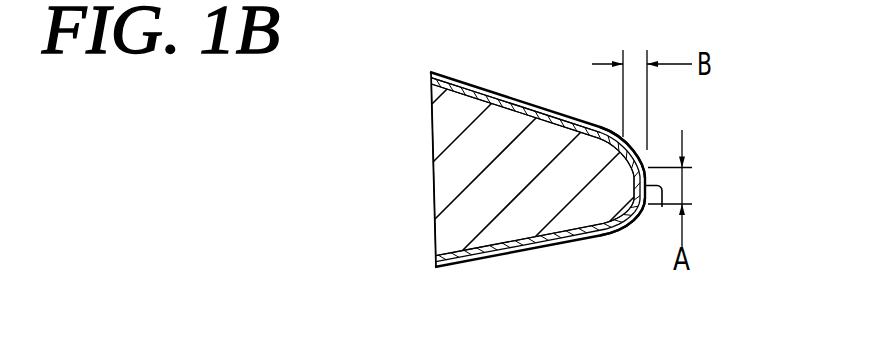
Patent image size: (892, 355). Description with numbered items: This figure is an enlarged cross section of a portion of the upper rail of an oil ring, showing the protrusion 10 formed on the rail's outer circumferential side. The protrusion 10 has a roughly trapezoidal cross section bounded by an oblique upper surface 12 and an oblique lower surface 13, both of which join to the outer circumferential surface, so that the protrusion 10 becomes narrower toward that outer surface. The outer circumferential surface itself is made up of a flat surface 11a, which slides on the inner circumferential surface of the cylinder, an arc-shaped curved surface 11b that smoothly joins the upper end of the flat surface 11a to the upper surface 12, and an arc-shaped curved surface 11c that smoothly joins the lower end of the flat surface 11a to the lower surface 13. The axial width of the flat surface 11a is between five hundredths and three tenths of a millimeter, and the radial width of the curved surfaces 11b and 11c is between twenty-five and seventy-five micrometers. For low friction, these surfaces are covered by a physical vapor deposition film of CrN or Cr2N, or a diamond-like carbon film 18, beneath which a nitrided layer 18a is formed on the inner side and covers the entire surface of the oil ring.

The protrusion 10 is at (440, 178).
The upper surface 12 is at (492, 92).
The lower surface 13 is at (511, 252).
The diamond-like carbon film 18 is at (583, 246).
The nitrided layer 18a is at (532, 109).
The flat surface 11a is at (662, 207).
The arc-shaped curved surface 11b is at (640, 142).
The arc-shaped curved surface 11c is at (645, 205).